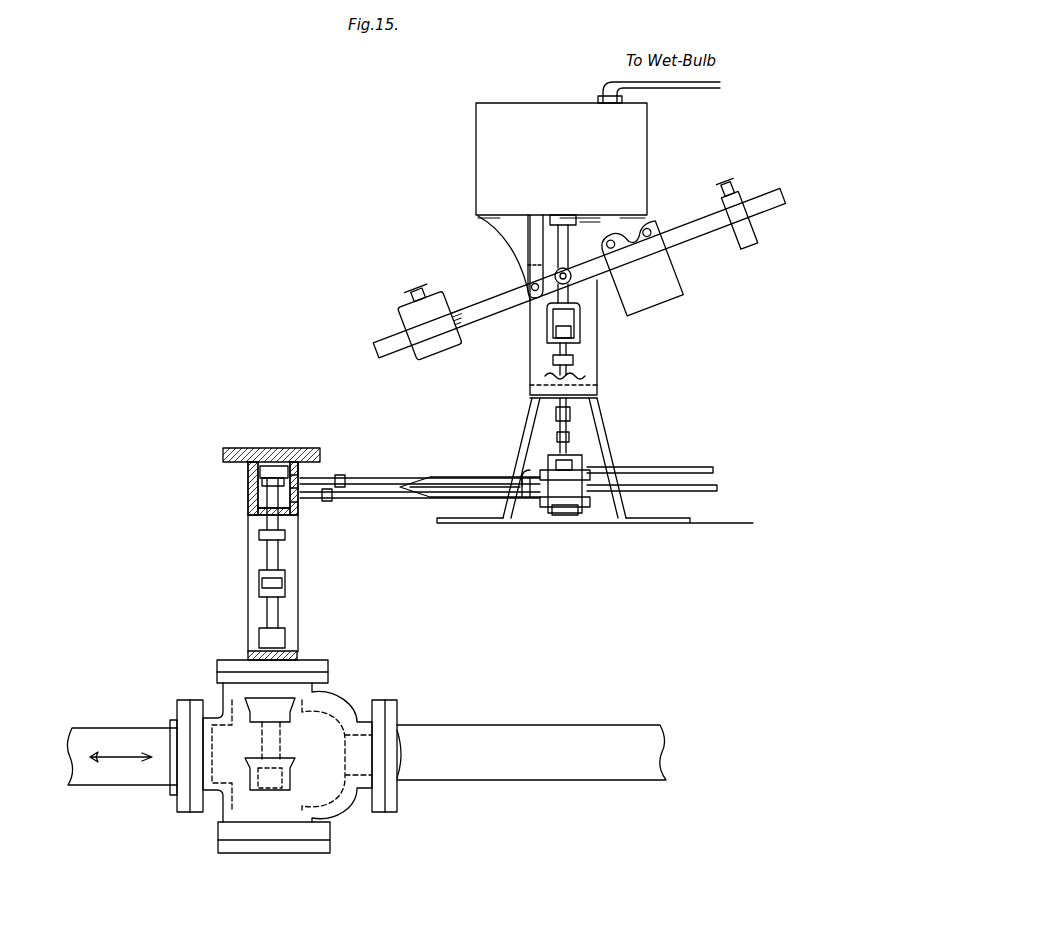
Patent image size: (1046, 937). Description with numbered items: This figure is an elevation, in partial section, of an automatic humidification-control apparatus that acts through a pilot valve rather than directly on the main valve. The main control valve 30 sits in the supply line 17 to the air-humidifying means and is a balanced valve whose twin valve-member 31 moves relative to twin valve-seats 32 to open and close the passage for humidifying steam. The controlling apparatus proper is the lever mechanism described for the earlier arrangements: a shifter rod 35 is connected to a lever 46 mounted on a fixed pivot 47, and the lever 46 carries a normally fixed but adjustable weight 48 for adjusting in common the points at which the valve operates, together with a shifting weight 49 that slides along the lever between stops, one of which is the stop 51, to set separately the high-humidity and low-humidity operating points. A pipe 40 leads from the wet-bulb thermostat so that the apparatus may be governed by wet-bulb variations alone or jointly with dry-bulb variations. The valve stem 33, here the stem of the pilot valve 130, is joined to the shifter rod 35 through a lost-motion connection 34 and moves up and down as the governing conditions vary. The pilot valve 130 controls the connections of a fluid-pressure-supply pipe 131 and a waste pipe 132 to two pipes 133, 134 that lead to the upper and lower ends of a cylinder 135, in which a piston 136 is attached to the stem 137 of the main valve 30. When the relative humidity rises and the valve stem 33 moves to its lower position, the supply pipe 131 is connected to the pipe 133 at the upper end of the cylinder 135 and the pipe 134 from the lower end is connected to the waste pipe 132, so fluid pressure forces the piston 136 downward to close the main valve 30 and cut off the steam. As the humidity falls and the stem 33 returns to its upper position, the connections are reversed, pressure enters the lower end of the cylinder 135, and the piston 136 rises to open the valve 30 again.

The supply line 17 is at (110, 728).
The control valve 30 is at (270, 790).
The twin valve-member 31 is at (225, 818).
The twin valve-seats 32 is at (283, 725).
The valve stem 33 is at (572, 364).
The lost-motion connection 34 is at (547, 340).
The shifter rod 35 is at (538, 245).
The pipe 40 is at (705, 92).
The lever 46 is at (376, 344).
The fixed pivot 47 is at (540, 298).
The adjustable weight 48 is at (420, 316).
The shifting weight 49 is at (645, 280).
The stop 51 is at (600, 280).
The pilot valve 130 is at (565, 515).
The fluid-pressure-supply pipe 131 is at (718, 488).
The waste pipe 132 is at (712, 462).
The pipe 133 is at (395, 460).
The pipe 134 is at (378, 502).
The cylinder 135 is at (246, 458).
The piston 136 is at (258, 480).
The stem 137 is at (262, 506).